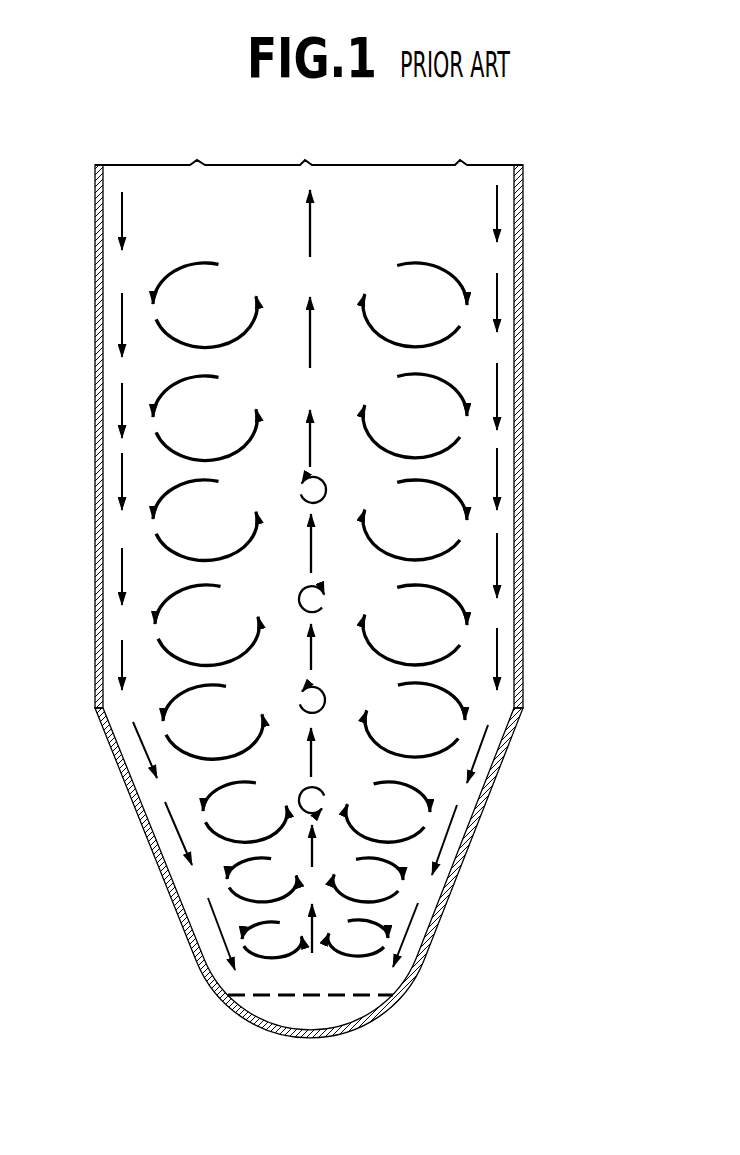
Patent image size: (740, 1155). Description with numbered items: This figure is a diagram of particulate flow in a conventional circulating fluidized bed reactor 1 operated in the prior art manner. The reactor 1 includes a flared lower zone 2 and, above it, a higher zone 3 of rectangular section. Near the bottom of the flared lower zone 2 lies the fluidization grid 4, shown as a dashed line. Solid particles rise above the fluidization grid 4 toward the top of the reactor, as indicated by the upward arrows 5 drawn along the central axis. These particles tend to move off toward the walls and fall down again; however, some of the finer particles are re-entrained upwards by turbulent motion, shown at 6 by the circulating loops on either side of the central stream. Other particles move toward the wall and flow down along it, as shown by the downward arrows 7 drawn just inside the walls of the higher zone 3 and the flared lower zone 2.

The reactor 1 is at (348, 599).
The flared lower zone 2 is at (466, 862).
The higher zone 3 is at (523, 412).
The fluidization grid 4 is at (343, 995).
The arrows 5 is at (313, 663).
The turbulent motion 6 is at (228, 553).
The arrows 7 is at (123, 477).